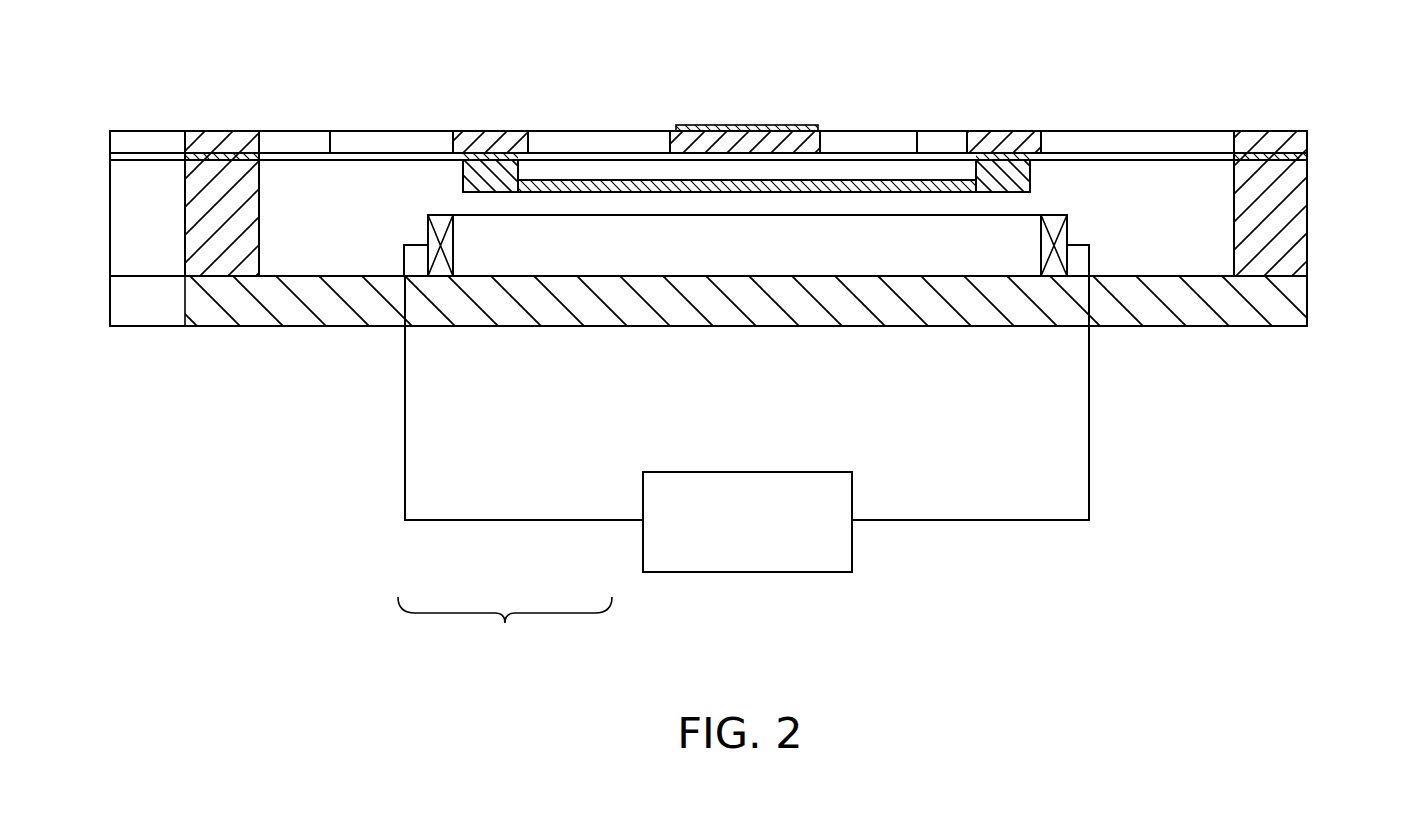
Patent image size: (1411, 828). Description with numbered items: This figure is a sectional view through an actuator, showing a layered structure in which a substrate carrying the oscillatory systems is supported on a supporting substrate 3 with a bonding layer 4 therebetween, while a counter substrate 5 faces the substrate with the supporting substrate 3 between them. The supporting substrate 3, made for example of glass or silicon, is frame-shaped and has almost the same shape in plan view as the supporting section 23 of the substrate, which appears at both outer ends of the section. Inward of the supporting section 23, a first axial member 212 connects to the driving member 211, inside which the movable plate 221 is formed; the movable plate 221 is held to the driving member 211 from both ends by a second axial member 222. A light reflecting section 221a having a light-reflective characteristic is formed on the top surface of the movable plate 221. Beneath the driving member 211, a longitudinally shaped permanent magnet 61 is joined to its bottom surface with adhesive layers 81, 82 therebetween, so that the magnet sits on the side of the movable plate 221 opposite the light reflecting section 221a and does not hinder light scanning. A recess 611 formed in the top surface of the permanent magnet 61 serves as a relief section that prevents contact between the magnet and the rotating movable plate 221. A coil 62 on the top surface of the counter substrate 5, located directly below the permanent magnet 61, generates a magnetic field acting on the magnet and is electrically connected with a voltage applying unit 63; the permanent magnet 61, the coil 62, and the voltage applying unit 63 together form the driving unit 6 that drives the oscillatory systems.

The supporting substrate 3 is at (1287, 216).
The bonding layer 4 is at (1300, 158).
The counter substrate 5 is at (1287, 305).
The driving unit 6 is at (505, 627).
The supporting section 23 is at (215, 143).
The permanent magnet 61 is at (693, 187).
The coil 62 is at (448, 274).
The voltage applying unit 63 is at (643, 541).
The adhesive layer 81 is at (463, 137).
The adhesive layer 82 is at (1027, 135).
The driving member 211 is at (490, 141).
The first axial member 212 is at (358, 140).
The movable plate 221 is at (688, 141).
The light reflecting section 221a is at (748, 126).
The second axial member 222 is at (865, 143).
The recess 611 is at (593, 172).